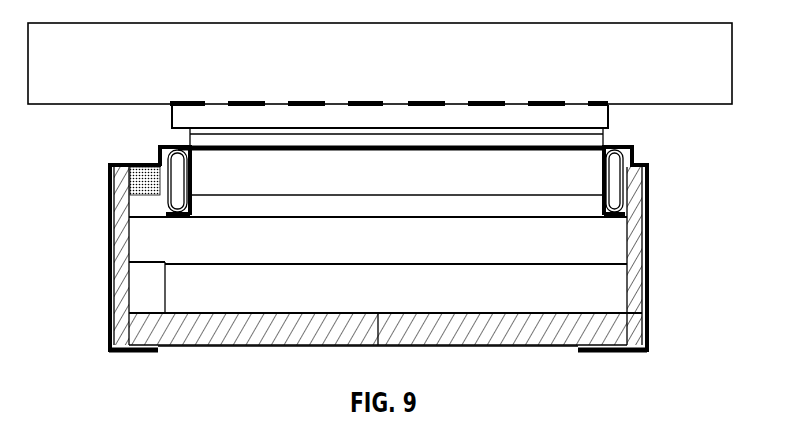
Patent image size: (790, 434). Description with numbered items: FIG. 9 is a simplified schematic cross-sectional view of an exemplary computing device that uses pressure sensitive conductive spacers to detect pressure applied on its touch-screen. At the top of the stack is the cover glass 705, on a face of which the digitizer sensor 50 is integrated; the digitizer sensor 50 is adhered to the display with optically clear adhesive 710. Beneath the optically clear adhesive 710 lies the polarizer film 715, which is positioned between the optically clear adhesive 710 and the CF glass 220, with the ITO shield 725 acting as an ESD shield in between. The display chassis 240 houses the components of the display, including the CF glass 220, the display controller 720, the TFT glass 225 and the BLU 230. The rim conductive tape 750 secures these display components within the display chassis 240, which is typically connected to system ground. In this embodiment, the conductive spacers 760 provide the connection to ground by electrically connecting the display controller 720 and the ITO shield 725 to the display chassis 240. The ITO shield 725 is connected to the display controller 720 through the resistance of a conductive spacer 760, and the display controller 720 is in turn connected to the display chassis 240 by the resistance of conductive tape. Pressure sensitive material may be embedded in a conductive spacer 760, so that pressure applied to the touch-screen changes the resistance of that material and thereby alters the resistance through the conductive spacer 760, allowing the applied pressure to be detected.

The cover glass 705 is at (678, 97).
The digitizer sensor 50 is at (570, 107).
The optically clear adhesive 710 is at (172, 109).
The polarizer film 715 is at (203, 145).
The ITO shield 725 is at (157, 147).
The display controller 720 is at (137, 185).
The rim conductive tape 750 is at (110, 288).
The conductive spacers 760 is at (175, 193).
The CF glass 220 is at (583, 180).
The TFT glass 225 is at (627, 251).
The BLU 230 is at (627, 290).
The display chassis 240 is at (627, 325).